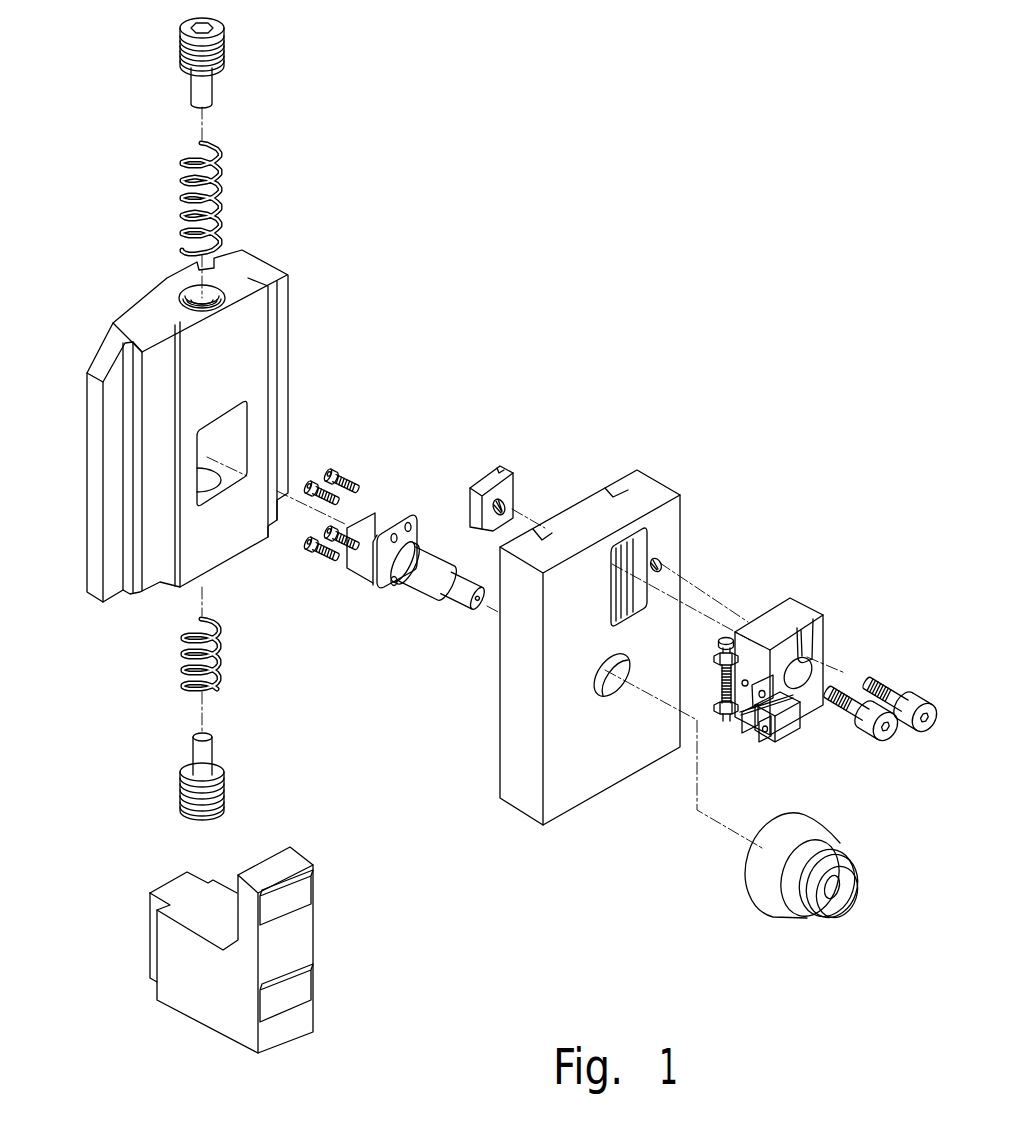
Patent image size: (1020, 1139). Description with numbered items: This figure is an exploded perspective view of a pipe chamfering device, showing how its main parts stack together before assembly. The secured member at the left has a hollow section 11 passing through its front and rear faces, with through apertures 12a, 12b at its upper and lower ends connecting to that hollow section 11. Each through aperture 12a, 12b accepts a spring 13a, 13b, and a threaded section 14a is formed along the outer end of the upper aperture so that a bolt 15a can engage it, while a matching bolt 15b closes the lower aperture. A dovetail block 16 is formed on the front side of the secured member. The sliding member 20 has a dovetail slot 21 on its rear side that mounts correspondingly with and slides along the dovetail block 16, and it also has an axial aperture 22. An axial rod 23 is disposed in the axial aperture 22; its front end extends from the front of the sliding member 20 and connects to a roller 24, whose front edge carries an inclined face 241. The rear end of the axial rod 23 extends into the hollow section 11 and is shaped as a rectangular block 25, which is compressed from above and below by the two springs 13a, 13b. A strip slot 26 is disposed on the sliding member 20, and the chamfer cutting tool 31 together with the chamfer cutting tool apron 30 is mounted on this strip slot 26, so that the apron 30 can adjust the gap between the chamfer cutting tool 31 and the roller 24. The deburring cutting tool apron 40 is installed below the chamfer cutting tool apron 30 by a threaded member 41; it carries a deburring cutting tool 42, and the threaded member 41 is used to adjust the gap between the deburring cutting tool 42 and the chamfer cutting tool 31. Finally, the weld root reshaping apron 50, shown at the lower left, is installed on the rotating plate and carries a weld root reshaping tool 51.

The bolt 15a is at (225, 44).
The spring 13a is at (221, 185).
The threaded section 14a is at (198, 292).
The through aperture 12a is at (148, 270).
The dovetail block 16 is at (247, 342).
The hollow section 11 is at (238, 428).
The through aperture 12b is at (205, 478).
The spring 13b is at (222, 657).
The bolt 15b is at (223, 793).
The rectangular block 25 is at (372, 527).
The axial rod 23 is at (434, 563).
The dovetail slot 21 is at (580, 514).
The sliding member 20 is at (663, 479).
The strip slot 26 is at (633, 553).
The axial aperture 22 is at (612, 693).
The chamfer cutting tool apron 30 is at (812, 615).
The threaded member 41 is at (718, 684).
The chamfer cutting tool 31 is at (752, 728).
The deburring cutting tool apron 40 is at (785, 731).
The deburring cutting tool 42 is at (764, 745).
The roller 24 is at (798, 816).
The inclined face 241 is at (822, 829).
The weld root reshaping apron 50 is at (208, 1010).
The weld root reshaping tool 51 is at (314, 886).